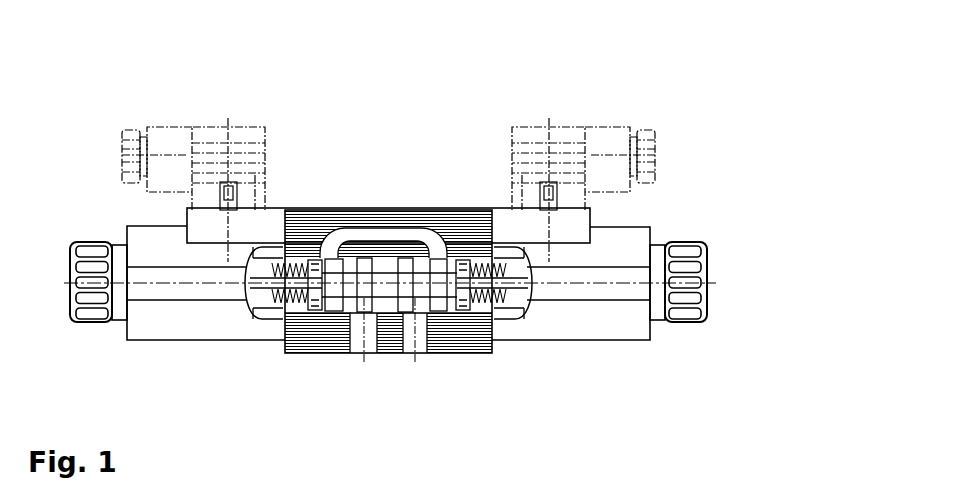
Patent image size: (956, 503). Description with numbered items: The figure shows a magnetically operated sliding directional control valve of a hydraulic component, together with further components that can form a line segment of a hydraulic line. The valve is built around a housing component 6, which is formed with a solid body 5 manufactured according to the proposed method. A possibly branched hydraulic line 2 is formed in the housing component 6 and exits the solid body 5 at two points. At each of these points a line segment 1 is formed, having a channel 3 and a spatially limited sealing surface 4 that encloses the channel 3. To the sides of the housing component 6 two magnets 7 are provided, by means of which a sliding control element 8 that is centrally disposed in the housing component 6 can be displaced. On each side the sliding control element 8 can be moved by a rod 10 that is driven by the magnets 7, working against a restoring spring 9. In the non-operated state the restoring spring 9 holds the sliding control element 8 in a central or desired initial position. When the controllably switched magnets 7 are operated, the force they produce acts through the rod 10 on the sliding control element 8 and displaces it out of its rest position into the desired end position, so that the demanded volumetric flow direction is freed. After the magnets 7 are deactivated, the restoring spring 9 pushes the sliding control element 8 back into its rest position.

The line segment 1 is at (457, 350).
The hydraulic line 2 is at (400, 233).
The channel 3 is at (352, 326).
The sealing surface 4 is at (383, 353).
The solid body 5 is at (460, 233).
The housing component 6 is at (318, 195).
The magnets 7 is at (222, 323).
The sliding control element 8 is at (368, 280).
The restoring spring 9 is at (493, 295).
The rod 10 is at (520, 287).